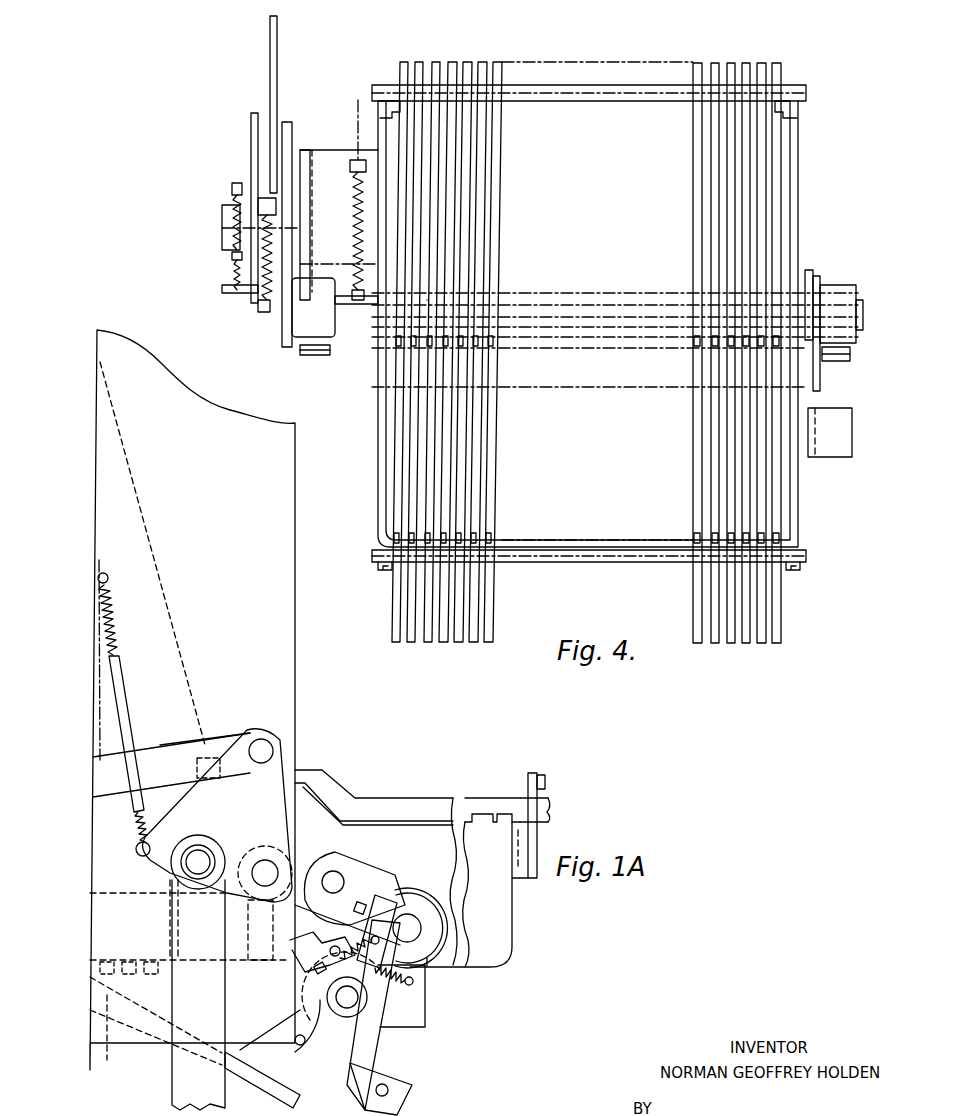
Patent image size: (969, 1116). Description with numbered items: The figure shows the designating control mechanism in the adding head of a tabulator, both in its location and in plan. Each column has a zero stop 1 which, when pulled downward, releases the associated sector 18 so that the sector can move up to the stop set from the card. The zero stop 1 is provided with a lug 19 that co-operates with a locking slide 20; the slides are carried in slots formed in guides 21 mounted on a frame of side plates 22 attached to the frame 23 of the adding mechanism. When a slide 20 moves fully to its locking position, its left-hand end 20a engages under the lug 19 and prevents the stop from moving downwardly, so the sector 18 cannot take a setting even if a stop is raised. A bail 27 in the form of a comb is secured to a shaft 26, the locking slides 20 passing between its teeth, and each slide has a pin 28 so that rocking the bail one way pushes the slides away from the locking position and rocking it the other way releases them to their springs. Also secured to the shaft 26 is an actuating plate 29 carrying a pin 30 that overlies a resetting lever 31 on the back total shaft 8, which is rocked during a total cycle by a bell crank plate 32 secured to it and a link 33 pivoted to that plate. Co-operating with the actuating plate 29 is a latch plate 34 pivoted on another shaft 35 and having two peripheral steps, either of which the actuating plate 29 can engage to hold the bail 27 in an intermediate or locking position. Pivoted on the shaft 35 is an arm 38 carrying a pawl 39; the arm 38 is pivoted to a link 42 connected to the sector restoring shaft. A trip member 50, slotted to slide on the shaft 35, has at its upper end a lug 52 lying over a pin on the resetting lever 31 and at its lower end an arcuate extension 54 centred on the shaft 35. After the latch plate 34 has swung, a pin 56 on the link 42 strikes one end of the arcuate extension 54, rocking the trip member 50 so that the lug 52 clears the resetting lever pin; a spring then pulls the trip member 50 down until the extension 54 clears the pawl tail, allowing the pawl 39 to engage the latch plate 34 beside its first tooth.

In FIG. 1A, the zero stop 1 is at (159, 707).
In FIG. 1A, the back total shaft 8 is at (265, 860).
In FIG. 1A, the sector 18 is at (150, 672).
In FIG. 1A, the lug 19 is at (212, 745).
In FIG. 4, the locking slide 20 is at (470, 485).
In FIG. 1A, the locking slide 20 is at (333, 797).
In FIG. 4, the left-hand end of the slide 20a is at (450, 55).
In FIG. 4, the guide 21 is at (553, 85).
In FIG. 4, the side plate 22 is at (378, 437).
In FIG. 1A, the side plate 22 is at (485, 937).
In FIG. 1A, the frame of the adding mechanism 23 is at (268, 693).
In FIG. 4, the shaft 26 is at (352, 310).
In FIG. 4, the bail 27 is at (470, 323).
In FIG. 4, the pin 28 is at (503, 355).
In FIG. 4, the actuating plate 29 is at (292, 195).
In FIG. 1A, the actuating plate 29 is at (368, 892).
In FIG. 4, the pin 30 is at (278, 197).
In FIG. 1A, the pin 30 is at (330, 875).
In FIG. 1A, the resetting lever 31 is at (337, 915).
In FIG. 1A, the bell crank plate 32 is at (162, 860).
In FIG. 1A, the link 33 is at (185, 1068).
In FIG. 4, the latch plate 34 is at (300, 165).
In FIG. 1A, the latch plate 34 is at (305, 953).
In FIG. 4, the shaft 35 is at (222, 229).
In FIG. 1A, the shaft 35 is at (350, 998).
In FIG. 4, the arm 38 is at (283, 125).
In FIG. 1A, the arm 38 is at (300, 1085).
In FIG. 4, the pawl 39 is at (292, 125).
In FIG. 1A, the pawl 39 is at (370, 1040).
In FIG. 4, the link 42 is at (270, 40).
In FIG. 1A, the link 42 is at (105, 1037).
In FIG. 4, the trip member 50 is at (235, 266).
In FIG. 1A, the trip member 50 is at (410, 985).
In FIG. 4, the lug 52 is at (252, 305).
In FIG. 1A, the lug 52 is at (378, 900).
In FIG. 4, the arcuate extension 54 is at (251, 145).
In FIG. 1A, the arcuate extension 54 is at (285, 1065).
In FIG. 1A, the pin 56 is at (390, 1090).